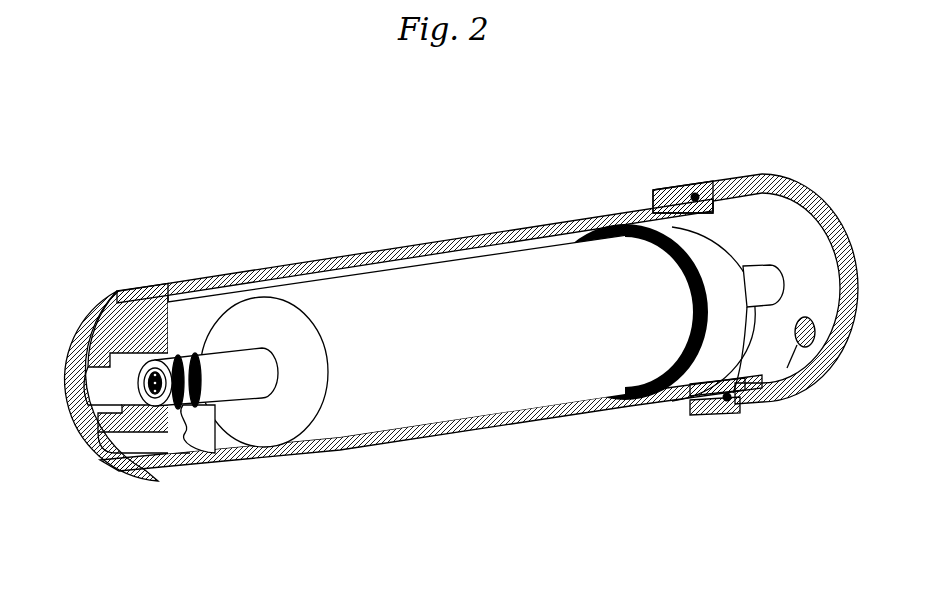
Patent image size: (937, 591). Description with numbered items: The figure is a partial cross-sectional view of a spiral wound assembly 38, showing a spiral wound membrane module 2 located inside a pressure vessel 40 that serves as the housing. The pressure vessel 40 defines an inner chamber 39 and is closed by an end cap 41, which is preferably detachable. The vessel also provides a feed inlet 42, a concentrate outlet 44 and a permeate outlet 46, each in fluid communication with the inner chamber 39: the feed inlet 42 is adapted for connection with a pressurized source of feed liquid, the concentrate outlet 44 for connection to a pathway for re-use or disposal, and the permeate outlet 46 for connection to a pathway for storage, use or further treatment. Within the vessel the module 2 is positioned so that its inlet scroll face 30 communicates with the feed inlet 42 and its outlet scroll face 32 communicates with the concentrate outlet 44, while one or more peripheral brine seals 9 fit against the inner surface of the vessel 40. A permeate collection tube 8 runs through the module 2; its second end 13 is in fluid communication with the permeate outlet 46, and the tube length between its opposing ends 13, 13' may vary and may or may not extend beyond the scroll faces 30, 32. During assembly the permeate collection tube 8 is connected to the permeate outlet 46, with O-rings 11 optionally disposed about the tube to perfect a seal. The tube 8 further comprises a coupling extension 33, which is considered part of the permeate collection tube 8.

The spiral wound membrane module 2 is at (450, 267).
The permeate collection tube 8 is at (222, 412).
The peripheral brine seal 9 is at (632, 418).
The O-rings 11 is at (178, 305).
The second end of the permeate collection tube 13 is at (116, 301).
The opposing end of the permeate collection tube 13' is at (710, 383).
The inlet scroll face 30 is at (666, 207).
The outlet scroll face 32 is at (250, 315).
The coupling extension 33 is at (205, 412).
The spiral wound assembly 38 is at (300, 251).
The inner chamber 39 is at (517, 251).
The pressure vessel 40 is at (375, 445).
The end cap 41 is at (813, 397).
The feed inlet 42 is at (760, 405).
The concentrate outlet 44 is at (155, 470).
The permeate outlet 46 is at (80, 332).